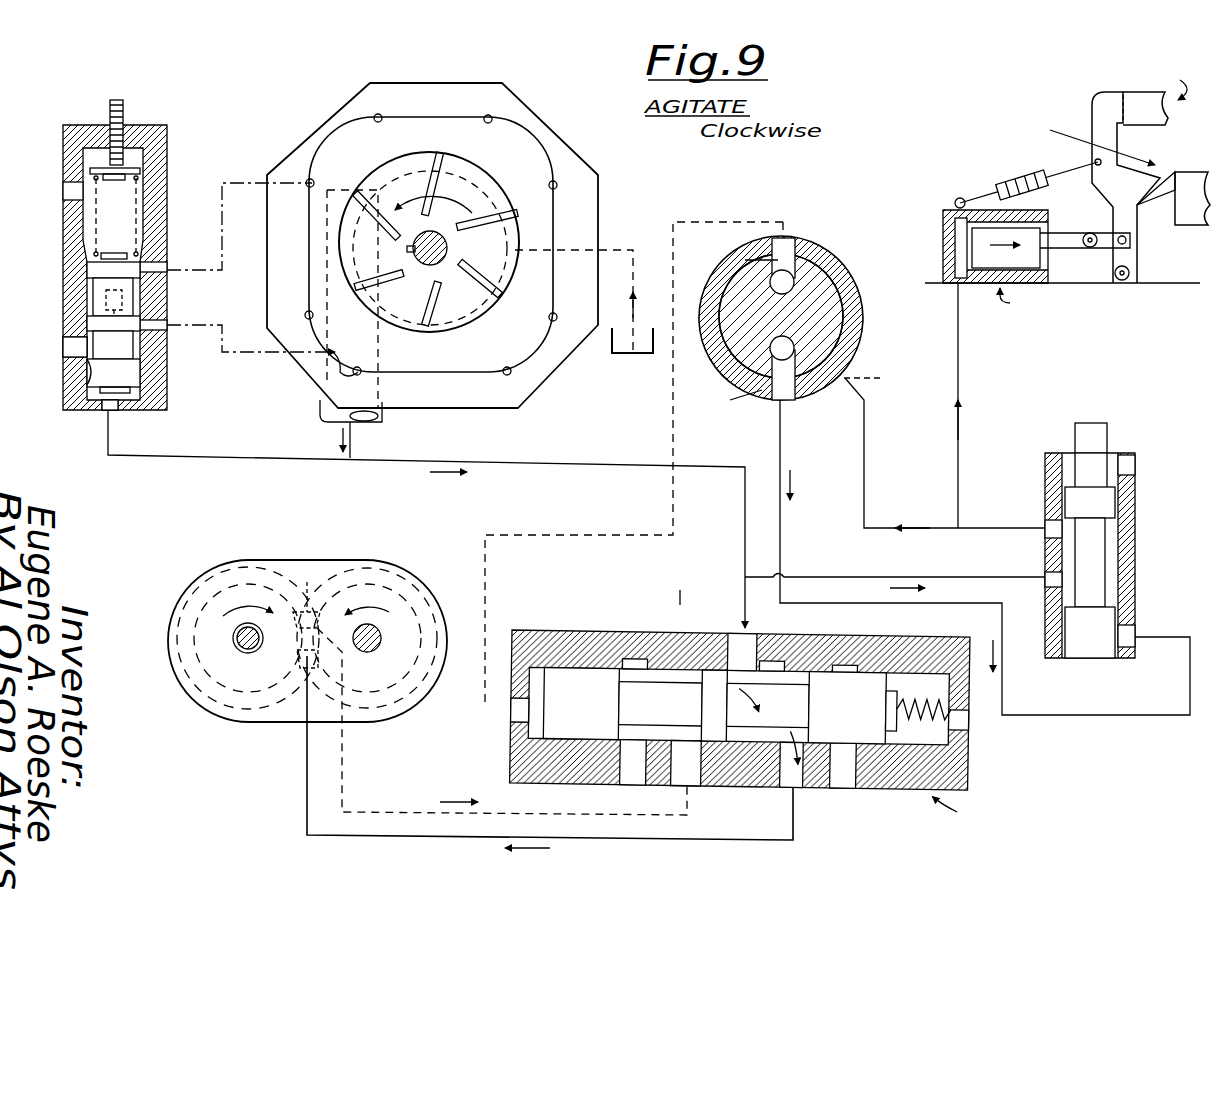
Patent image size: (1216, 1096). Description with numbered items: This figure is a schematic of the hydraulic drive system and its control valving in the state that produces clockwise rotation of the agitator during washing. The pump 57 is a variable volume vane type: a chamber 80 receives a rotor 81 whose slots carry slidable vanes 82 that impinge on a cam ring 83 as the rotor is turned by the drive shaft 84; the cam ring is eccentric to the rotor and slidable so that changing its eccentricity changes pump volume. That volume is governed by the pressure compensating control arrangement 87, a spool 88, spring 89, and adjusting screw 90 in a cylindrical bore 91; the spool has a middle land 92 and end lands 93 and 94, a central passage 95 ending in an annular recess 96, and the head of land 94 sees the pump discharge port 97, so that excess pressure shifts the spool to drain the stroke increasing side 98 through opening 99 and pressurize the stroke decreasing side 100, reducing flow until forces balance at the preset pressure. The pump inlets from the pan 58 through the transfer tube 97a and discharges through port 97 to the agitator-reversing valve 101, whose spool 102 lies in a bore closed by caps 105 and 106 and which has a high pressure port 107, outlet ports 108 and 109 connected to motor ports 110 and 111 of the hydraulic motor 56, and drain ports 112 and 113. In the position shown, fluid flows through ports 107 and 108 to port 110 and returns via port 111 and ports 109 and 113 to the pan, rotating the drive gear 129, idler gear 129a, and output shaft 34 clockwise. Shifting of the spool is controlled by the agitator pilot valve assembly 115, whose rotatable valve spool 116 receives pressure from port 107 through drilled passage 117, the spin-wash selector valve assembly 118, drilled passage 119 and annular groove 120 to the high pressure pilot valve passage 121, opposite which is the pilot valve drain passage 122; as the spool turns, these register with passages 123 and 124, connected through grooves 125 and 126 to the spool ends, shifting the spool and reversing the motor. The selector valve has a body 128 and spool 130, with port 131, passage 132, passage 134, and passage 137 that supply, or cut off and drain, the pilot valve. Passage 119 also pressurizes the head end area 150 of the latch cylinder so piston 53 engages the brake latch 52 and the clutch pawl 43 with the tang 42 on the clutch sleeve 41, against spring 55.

The output shaft 34 is at (240, 651).
The clutch sleeve 41 is at (1195, 228).
The tang 42 is at (1170, 195).
The clutch pawl 43 is at (1160, 178).
The brake latch 52 is at (1100, 95).
The piston 53 is at (970, 245).
The spring 55 is at (1025, 175).
The hydraulic motor 56 is at (190, 580).
The pump 57 is at (545, 100).
The pan 58 is at (585, 324).
The chamber 80 is at (462, 318).
The rotor 81 is at (470, 180).
The vanes 82 is at (478, 215).
The cam ring 83 is at (535, 275).
The drive shaft 84 is at (425, 275).
The pressure compensating control arrangement 87 is at (172, 137).
The spool 88 is at (93, 283).
The spring 89 is at (140, 176).
The adjusting screw 90 is at (110, 106).
The cylindrical bore 91 is at (93, 400).
The middle land 92 is at (90, 320).
The end land 93 is at (125, 270).
The end land 94 is at (128, 370).
The central passage 95 is at (120, 342).
The annular recess 96 is at (133, 296).
The pump discharge port 97 is at (340, 227).
The transfer tube 97a is at (385, 422).
The stroke increasing side 98 is at (262, 361).
The opening 99 is at (68, 347).
The stroke decreasing side 100 is at (362, 130).
The agitator-reversing valve 101 is at (789, 710).
The spool 102 is at (592, 694).
The cap 105 is at (972, 763).
The cap 106 is at (512, 760).
The high pressure port 107 is at (740, 640).
The outlet port 108 is at (790, 783).
The outlet port 109 is at (692, 783).
The motor port 110 is at (295, 663).
The motor port 111 is at (487, 689).
The drain port 112 is at (843, 783).
The drain port 113 is at (633, 782).
The agitator pilot valve assembly 115 is at (815, 250).
The rotatable valve spool 116 is at (838, 290).
The drilled passage 117 is at (862, 575).
The spin-wash selector valve assembly 118 is at (1120, 448).
The drilled passage 119 is at (942, 443).
The annular groove 120 is at (862, 329).
The high pressure pilot valve passage 121 is at (731, 405).
The pilot valve drain passage 122 is at (745, 259).
The passage 123 is at (788, 395).
The passage 124 is at (770, 236).
The groove 125 is at (965, 715).
The groove 126 is at (512, 710).
The body 128 is at (1130, 562).
The drive gear 129 is at (213, 697).
The idler gear 129a is at (365, 698).
The spool 130 is at (1100, 540).
The port 131 is at (1128, 635).
The passage 132 is at (1045, 580).
The passage 134 is at (1045, 530).
The passage 137 is at (1128, 466).
The head end area 150 is at (945, 228).